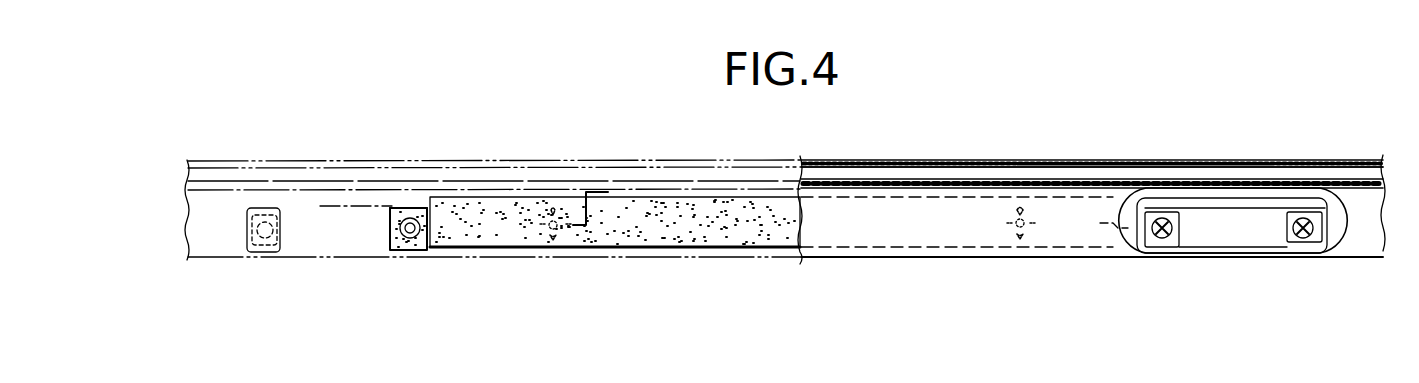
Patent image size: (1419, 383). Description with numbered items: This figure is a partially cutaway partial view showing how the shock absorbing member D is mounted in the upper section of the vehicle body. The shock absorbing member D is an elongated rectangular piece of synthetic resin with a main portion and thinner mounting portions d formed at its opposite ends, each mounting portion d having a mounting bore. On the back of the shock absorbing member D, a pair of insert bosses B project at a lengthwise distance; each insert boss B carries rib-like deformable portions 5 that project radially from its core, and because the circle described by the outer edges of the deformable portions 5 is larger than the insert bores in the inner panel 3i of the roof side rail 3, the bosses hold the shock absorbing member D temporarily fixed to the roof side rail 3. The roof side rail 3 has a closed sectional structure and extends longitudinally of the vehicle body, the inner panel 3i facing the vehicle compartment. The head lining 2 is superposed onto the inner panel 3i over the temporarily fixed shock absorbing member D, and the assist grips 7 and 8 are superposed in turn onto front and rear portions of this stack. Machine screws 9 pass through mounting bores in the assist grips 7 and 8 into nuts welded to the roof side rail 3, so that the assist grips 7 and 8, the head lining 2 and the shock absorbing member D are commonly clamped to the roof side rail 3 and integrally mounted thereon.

The head lining 2 is at (979, 186).
The roof side rail 3 is at (894, 152).
The inner panel 3i is at (836, 160).
The deformable portions 5 is at (226, 227).
The assist grip 7 is at (338, 248).
The assist grip 8 is at (1233, 238).
The machine screws 9 is at (408, 236).
The insert bosses B is at (558, 230).
The shock absorbing member D is at (748, 250).
The mounting portions d is at (423, 220).